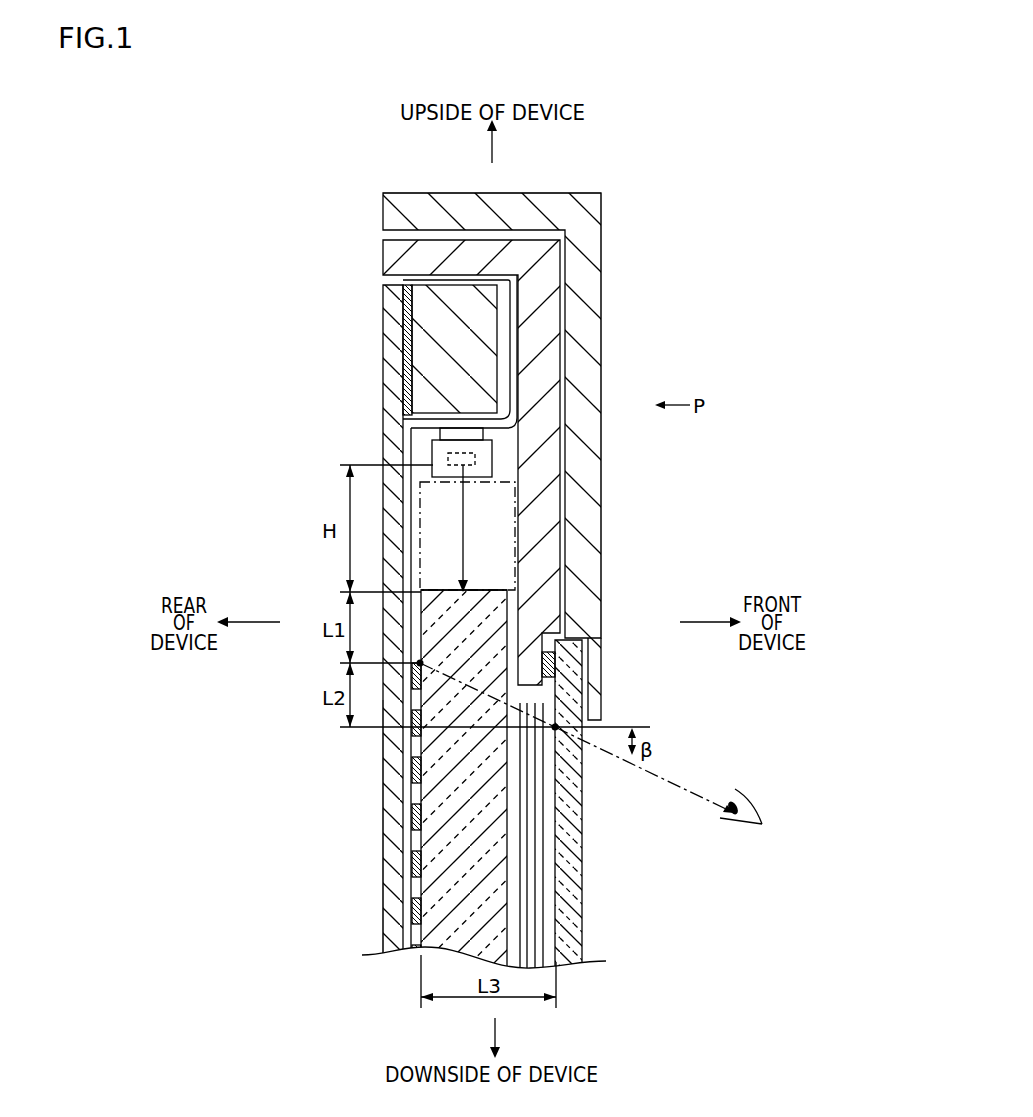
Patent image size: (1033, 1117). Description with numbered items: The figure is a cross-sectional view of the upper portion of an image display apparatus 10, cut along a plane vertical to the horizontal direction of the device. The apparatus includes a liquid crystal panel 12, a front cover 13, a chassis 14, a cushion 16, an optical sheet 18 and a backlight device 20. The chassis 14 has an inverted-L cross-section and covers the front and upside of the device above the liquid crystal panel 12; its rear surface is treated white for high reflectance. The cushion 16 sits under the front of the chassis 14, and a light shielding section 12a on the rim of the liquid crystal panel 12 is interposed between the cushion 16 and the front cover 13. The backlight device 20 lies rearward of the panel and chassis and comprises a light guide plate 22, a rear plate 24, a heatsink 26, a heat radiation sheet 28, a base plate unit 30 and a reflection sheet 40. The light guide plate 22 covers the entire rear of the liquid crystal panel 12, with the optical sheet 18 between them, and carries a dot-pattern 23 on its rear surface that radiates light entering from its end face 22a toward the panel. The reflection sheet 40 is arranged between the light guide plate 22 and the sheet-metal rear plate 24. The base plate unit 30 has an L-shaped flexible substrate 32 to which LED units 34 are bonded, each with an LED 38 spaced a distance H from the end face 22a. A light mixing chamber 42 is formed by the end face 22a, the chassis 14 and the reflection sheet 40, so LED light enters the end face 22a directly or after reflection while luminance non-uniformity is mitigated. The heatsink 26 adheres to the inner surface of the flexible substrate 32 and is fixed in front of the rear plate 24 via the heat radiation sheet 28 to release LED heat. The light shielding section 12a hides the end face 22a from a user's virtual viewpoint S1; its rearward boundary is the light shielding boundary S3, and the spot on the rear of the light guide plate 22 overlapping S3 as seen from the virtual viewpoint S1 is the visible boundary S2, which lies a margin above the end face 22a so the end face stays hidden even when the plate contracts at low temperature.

The image display apparatus 10 is at (632, 228).
The liquid crystal panel 12 is at (588, 888).
The light shielding section 12a is at (601, 684).
The front cover 13 is at (601, 293).
The chassis 14 is at (563, 408).
The cushion 16 is at (550, 652).
The optical sheet 18 is at (547, 810).
The backlight device 20 is at (350, 355).
The light guide plate 22 is at (510, 615).
The end face 22a is at (505, 588).
The dot-pattern 23 is at (412, 752).
The rear plate 24 is at (383, 826).
The heatsink 26 is at (453, 285).
The heat radiation sheet 28 is at (406, 285).
The base plate unit 30 is at (492, 457).
The flexible substrate 32 is at (512, 357).
The LED unit 34 is at (482, 481).
The LED 38 is at (475, 459).
The reflection sheet 40 is at (412, 530).
The light mixing chamber 42 is at (515, 516).
The virtual viewpoint S1 is at (732, 800).
The visible boundary S2 is at (420, 664).
The light shielding boundary S3 is at (590, 716).